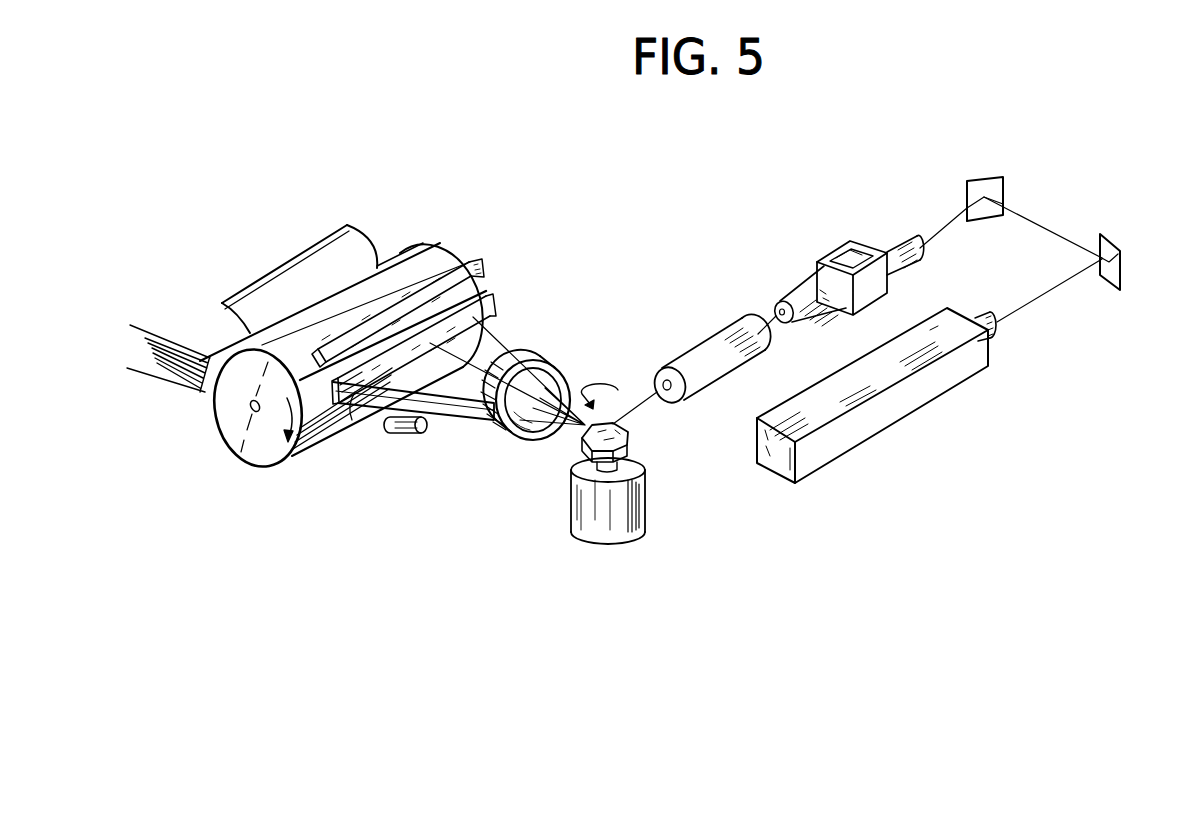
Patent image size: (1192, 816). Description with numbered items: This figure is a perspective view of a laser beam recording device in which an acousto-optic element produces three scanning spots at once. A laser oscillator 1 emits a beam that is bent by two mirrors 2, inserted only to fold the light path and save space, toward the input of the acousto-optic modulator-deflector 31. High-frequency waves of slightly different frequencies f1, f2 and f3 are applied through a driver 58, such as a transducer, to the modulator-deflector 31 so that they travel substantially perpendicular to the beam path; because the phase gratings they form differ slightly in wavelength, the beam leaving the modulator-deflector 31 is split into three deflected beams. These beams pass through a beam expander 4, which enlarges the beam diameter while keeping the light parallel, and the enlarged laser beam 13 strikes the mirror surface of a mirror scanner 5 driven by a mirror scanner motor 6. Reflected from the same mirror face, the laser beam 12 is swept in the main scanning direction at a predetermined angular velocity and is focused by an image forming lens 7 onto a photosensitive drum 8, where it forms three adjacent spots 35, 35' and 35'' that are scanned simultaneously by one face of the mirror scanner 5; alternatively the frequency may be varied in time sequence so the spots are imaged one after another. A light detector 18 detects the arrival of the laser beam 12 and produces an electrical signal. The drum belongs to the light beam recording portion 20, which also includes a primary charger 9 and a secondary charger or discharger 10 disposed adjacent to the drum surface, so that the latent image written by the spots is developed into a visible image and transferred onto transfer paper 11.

The laser oscillator 1 is at (873, 433).
The mirrors 2 is at (983, 181).
The beam expander 4 is at (713, 333).
The mirror scanner 5 is at (630, 435).
The mirror scanner motor 6 is at (646, 497).
The image forming lens 7 is at (553, 367).
The photosensitive drum 8 is at (446, 257).
The primary charger 9 is at (470, 277).
The secondary charger or discharger 10 is at (490, 301).
The transfer paper 11 is at (357, 228).
The laser beam 12 is at (444, 408).
The laser beam 13 is at (641, 396).
The light detector 18 is at (408, 435).
The light beam recording portion 20 is at (432, 242).
The acousto-optic modulator-deflector 31 is at (886, 287).
The spot 35 is at (325, 373).
The spot 35' is at (342, 422).
The spot 35'' is at (378, 435).
The driver 58 is at (869, 247).
The high-frequency wave frequency f1 is at (840, 254).
The high-frequency wave frequency f2 is at (848, 254).
The high-frequency wave frequency f3 is at (857, 254).